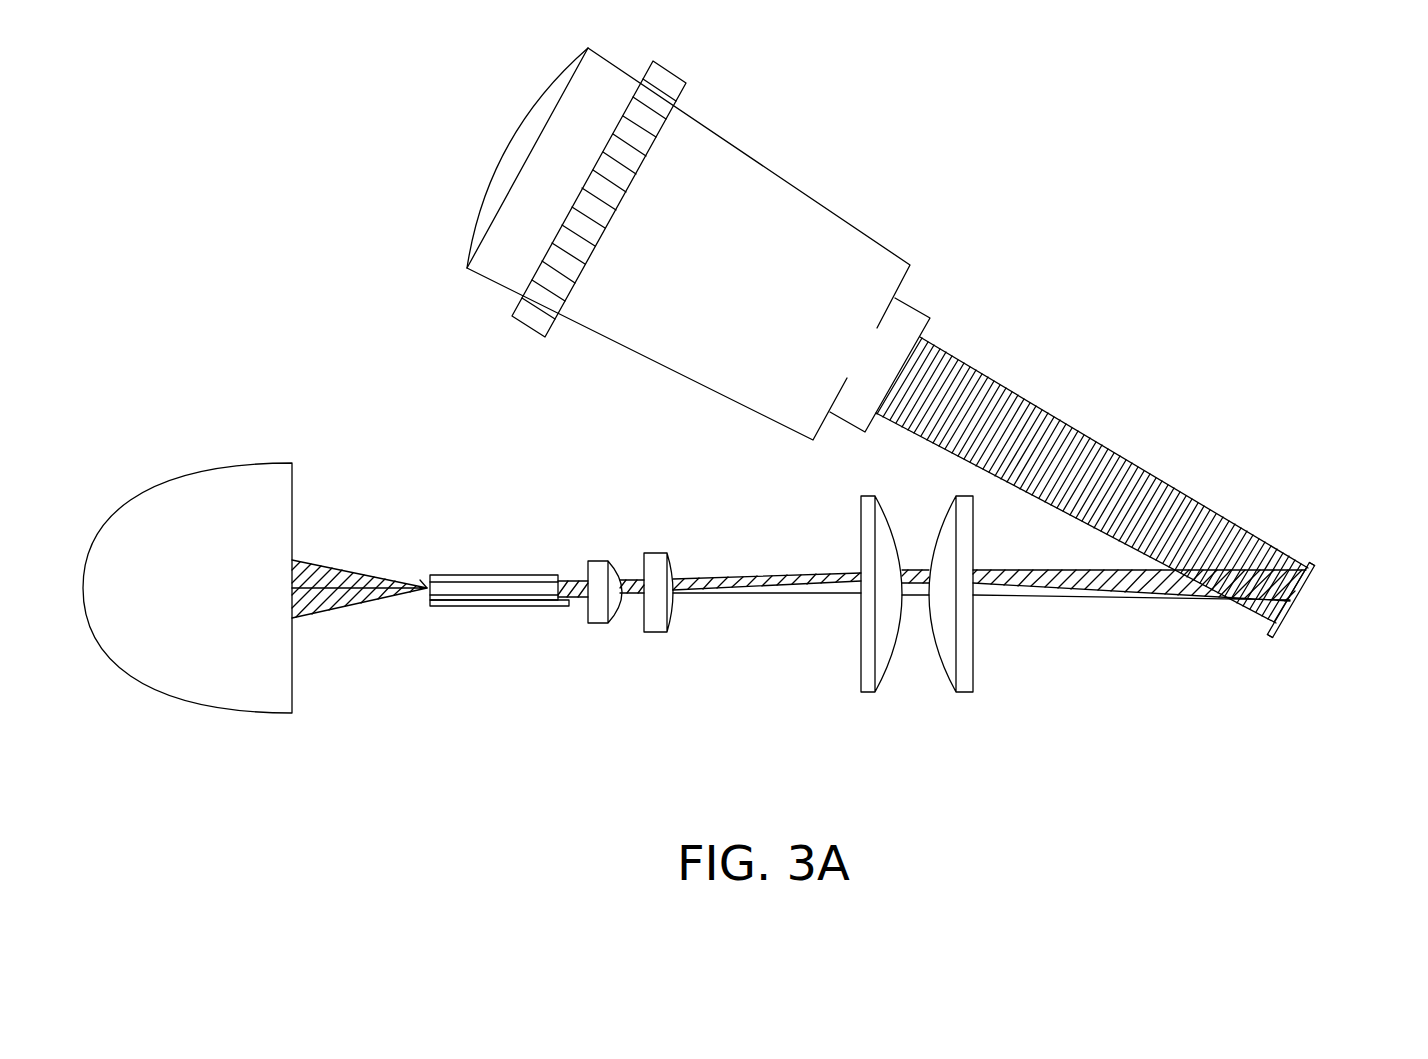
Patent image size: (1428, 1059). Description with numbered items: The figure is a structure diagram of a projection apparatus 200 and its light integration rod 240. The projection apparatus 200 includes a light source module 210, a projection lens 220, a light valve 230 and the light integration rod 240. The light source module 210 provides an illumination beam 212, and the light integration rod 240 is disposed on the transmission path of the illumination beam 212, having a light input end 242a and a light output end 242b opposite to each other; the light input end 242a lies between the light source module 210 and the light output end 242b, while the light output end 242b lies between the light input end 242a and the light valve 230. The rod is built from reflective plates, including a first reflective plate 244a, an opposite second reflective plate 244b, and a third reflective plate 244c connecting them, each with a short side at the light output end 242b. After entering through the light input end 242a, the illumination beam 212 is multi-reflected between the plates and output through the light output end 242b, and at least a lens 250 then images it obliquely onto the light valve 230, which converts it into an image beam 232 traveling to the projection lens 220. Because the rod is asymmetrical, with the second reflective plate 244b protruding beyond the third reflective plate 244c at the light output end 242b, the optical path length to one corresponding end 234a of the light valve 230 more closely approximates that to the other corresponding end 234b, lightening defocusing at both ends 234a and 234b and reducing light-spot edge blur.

The projection apparatus 200 is at (1362, 818).
The light source module 210 is at (212, 507).
The illumination beam 212 is at (340, 570).
The projection lens 220 is at (740, 212).
The light valve 230 is at (1337, 633).
The image beam 232 is at (1213, 547).
The corresponding end of the light valve 234a is at (1315, 566).
The another corresponding end of the light valve 234b is at (1274, 639).
The light integration rod 240 is at (509, 570).
The light input end 242a is at (428, 581).
The light output end 242b is at (559, 584).
The first reflective plate 244a is at (505, 580).
The second reflective plate 244b is at (530, 606).
The third reflective plate 244c is at (482, 596).
The lens 250 is at (598, 623).